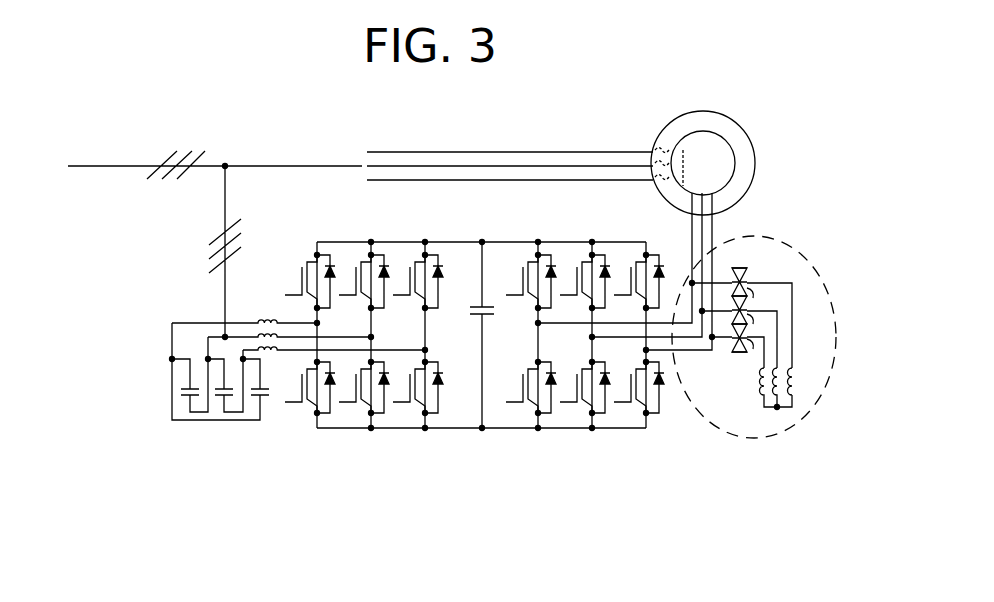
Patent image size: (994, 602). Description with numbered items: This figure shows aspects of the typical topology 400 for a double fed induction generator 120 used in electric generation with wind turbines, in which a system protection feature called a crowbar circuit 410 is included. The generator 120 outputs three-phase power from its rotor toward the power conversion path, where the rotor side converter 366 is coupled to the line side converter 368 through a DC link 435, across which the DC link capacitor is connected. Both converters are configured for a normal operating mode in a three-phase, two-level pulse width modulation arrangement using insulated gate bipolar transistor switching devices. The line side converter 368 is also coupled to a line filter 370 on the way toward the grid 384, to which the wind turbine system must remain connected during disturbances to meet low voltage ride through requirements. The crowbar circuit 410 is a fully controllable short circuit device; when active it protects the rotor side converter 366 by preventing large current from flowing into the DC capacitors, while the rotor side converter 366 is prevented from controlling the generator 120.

The grid bus 384 is at (101, 165).
The generator 120 is at (700, 112).
The crowbar circuit 410 is at (793, 248).
The DC link 435 is at (463, 242).
The line filter 370 is at (168, 390).
The line side converter 368 is at (350, 430).
The rotor side converter 366 is at (563, 430).
The topology 400 is at (755, 472).